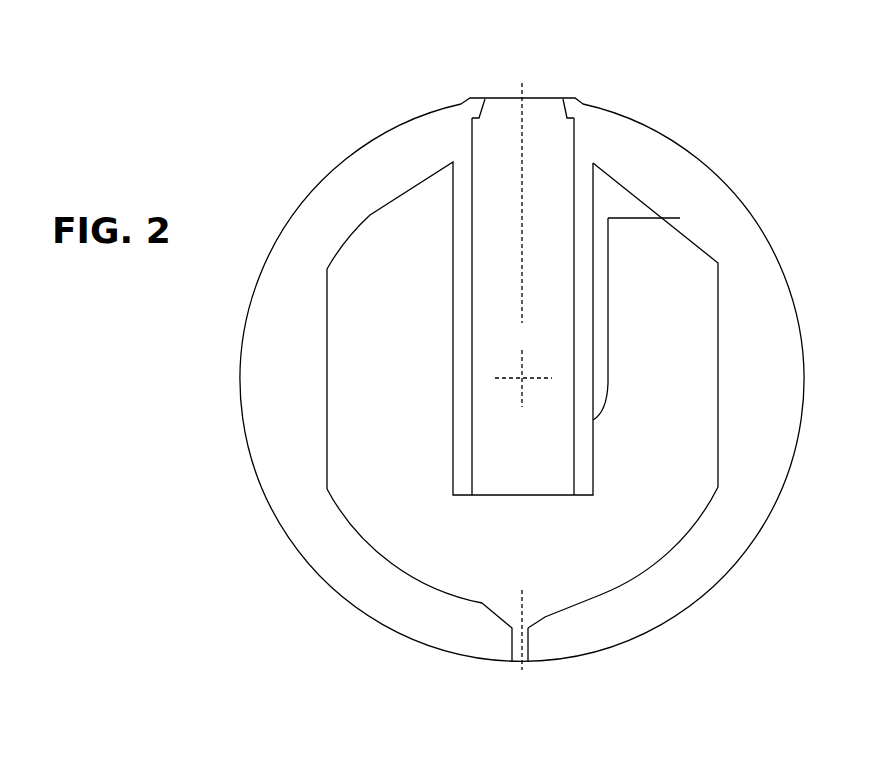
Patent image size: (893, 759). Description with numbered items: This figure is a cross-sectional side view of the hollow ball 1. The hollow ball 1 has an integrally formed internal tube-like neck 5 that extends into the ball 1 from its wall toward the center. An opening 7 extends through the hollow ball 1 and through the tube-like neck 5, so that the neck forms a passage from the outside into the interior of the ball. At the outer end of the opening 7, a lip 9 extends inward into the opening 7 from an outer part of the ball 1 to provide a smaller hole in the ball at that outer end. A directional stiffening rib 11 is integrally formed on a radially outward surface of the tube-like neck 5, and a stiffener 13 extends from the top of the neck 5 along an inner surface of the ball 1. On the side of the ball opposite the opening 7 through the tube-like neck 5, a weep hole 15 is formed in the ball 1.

The hollow ball 1 is at (249, 294).
The tube-like neck 5 is at (453, 272).
The opening 7 is at (472, 240).
The lip 9 is at (481, 108).
The directional stiffening rib 11 is at (610, 318).
The stiffener 13 is at (643, 218).
The weep hole 15 is at (530, 627).